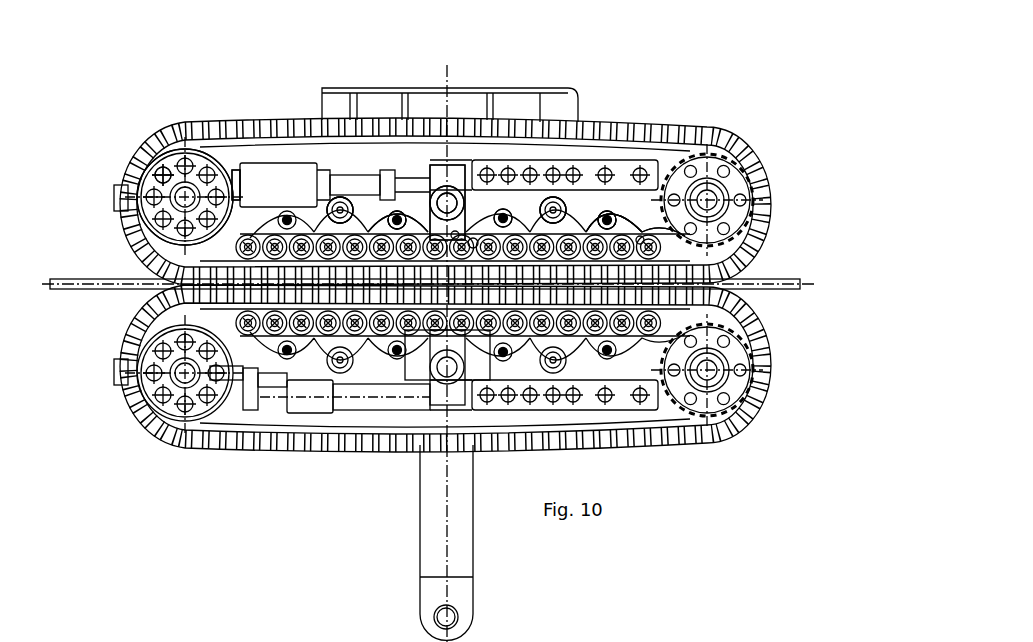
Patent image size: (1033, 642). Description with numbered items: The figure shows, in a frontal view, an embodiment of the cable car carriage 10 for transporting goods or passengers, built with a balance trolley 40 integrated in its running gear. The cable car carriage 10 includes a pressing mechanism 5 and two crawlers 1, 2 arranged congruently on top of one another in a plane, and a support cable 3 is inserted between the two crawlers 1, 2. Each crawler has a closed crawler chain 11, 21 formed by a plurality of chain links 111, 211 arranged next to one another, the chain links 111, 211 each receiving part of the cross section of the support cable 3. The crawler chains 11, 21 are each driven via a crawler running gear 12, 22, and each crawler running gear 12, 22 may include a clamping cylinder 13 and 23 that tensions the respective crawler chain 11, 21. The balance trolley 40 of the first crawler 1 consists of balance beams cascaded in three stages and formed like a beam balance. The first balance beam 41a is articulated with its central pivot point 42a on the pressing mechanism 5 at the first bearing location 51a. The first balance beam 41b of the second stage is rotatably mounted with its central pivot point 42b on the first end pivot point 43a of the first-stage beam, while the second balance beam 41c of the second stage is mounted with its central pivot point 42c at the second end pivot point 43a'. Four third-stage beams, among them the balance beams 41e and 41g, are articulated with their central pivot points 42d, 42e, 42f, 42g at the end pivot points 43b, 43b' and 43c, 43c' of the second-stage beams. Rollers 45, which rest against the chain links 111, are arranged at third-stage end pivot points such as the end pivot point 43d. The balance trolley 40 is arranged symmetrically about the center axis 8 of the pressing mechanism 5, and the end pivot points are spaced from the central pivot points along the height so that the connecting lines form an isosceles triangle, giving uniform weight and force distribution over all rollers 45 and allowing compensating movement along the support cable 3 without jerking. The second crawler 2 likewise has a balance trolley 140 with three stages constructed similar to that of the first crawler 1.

The first crawler 1 is at (113, 126).
The second crawler 2 is at (741, 445).
The support cable 3 is at (107, 280).
The pressing mechanism 5 is at (463, 103).
The center axis 8 is at (445, 555).
The cable car carriage 10 is at (200, 461).
The crawler chain 11 is at (735, 130).
The crawler running gear 12 is at (377, 173).
The clamping cylinder 13 is at (300, 178).
The crawler chain 21 is at (331, 462).
The crawler running gear 22 is at (455, 235).
The clamping cylinder 23 is at (300, 400).
The balance trolley 40 is at (484, 254).
The first balance beam 41a is at (503, 218).
The first balance beam of the second stage 41b is at (265, 228).
The second balance beam of the second stage 41c is at (640, 240).
The balance beam of the third stage 41e is at (412, 212).
The balance beam of the third stage 41g is at (620, 226).
The central pivot point 42a is at (460, 187).
The central pivot point 42b is at (345, 215).
The central pivot point 42c is at (640, 205).
The central pivot point 42d is at (235, 173).
The central pivot point 42e is at (397, 220).
The central pivot point 42f is at (560, 208).
The central pivot point 42g is at (607, 222).
The first end pivot point 43a is at (290, 130).
The second end pivot point 43a' is at (692, 150).
The end pivot point 43b is at (156, 134).
The end pivot point 43b' is at (376, 137).
The end pivot point 43c is at (656, 127).
The end pivot point 43c' is at (738, 168).
The end pivot point 43d is at (185, 190).
The rollers 45 is at (255, 225).
The first bearing location 51a is at (460, 187).
The chain links 111 is at (150, 198).
The chain links 211 is at (133, 402).
The balance trolley 140 is at (410, 376).